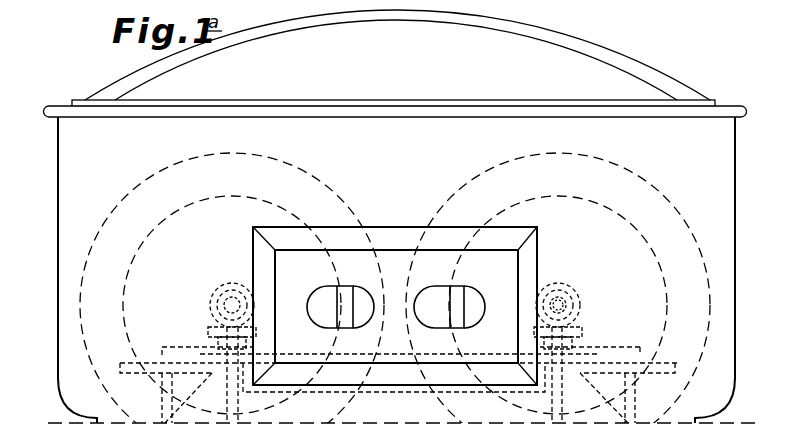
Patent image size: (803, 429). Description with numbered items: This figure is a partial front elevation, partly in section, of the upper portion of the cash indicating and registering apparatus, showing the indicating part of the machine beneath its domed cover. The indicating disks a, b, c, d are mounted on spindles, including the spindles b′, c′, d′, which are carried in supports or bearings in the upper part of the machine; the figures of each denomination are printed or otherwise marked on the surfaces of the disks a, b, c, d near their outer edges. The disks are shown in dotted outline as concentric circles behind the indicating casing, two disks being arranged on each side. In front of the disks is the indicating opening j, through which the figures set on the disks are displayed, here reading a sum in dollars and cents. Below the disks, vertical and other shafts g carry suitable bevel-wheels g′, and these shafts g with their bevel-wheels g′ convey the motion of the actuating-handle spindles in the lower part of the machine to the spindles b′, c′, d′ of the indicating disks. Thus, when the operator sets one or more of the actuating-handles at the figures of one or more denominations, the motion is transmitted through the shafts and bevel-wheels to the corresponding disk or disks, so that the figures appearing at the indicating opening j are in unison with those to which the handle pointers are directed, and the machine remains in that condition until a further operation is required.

The disk a is at (330, 319).
The disk b is at (357, 319).
The disk c is at (437, 320).
The disk d is at (467, 319).
The indicating opening j is at (308, 311).
The vertical and other shafts g is at (398, 375).
The bevel-wheels g′ is at (395, 329).
The spindle b′ is at (224, 306).
The spindle c′ is at (571, 303).
The spindle d′ is at (579, 307).